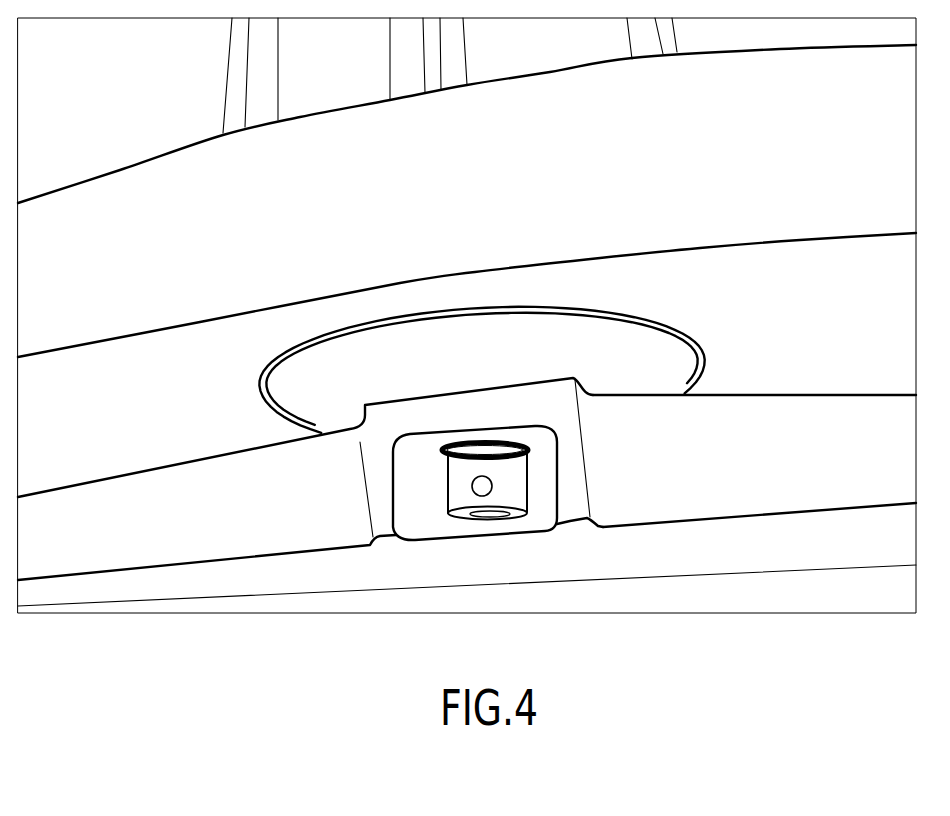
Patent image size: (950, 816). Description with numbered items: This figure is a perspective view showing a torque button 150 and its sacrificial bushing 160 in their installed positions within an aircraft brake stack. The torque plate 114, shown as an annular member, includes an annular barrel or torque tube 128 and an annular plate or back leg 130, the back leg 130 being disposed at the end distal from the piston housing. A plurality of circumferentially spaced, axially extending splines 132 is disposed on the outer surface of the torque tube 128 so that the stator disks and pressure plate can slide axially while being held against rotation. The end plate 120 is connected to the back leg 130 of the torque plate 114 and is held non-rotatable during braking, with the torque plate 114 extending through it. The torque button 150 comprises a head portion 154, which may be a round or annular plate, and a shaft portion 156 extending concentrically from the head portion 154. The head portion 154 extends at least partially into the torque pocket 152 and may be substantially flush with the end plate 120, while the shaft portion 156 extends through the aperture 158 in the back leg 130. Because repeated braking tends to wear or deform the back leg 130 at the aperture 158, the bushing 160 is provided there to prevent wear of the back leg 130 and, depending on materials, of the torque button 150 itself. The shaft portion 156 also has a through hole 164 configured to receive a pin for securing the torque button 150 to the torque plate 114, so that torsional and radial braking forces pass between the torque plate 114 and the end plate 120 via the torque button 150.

The torque plate 114 is at (835, 479).
The end plate 120 is at (587, 181).
The torque tube 128 is at (343, 80).
The splines 132 is at (229, 78).
The back leg 130 is at (669, 479).
The torque button 150 is at (683, 344).
The torque pocket 152 is at (581, 316).
The head portion 154 is at (350, 395).
The shaft portion 156 is at (520, 512).
The aperture 158 is at (455, 442).
The bushing 160 is at (479, 442).
The through hole 164 is at (485, 492).